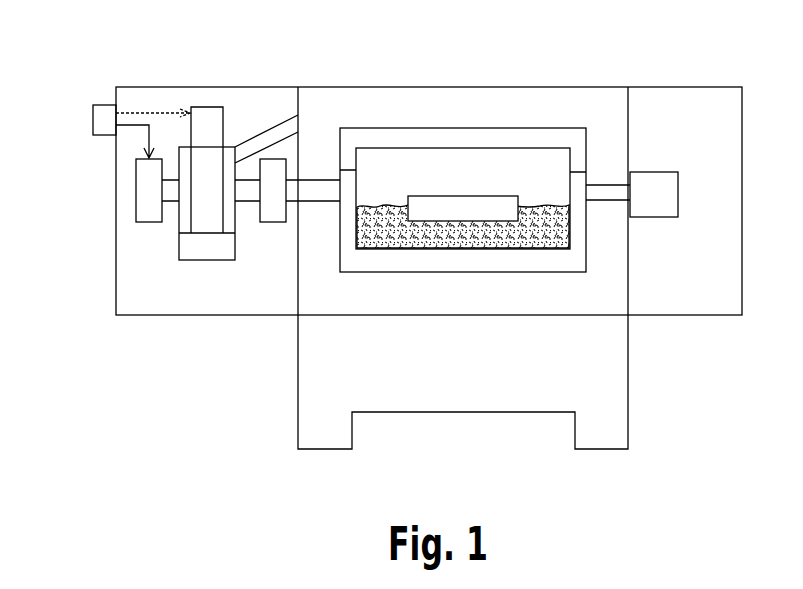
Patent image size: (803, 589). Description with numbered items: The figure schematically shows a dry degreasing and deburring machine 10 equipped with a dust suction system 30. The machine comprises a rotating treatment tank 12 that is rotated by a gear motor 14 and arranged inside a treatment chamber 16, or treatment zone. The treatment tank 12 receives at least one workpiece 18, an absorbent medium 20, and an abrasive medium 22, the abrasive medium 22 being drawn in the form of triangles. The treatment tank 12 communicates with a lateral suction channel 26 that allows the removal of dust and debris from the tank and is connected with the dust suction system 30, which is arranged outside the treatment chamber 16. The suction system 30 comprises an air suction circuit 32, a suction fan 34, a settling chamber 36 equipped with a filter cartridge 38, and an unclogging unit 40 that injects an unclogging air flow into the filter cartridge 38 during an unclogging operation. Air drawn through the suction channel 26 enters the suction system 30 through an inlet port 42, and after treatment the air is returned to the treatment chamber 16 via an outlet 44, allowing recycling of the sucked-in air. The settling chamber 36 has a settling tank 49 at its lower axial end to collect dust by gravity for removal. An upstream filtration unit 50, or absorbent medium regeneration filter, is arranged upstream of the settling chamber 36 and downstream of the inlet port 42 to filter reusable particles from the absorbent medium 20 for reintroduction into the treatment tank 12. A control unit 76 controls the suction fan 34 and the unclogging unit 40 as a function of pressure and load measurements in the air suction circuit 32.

The dry degreasing and deburring machine 10 is at (155, 42).
The rotating treatment tank 12 is at (590, 245).
The gear motor 14 is at (666, 205).
The treatment chamber 16 is at (617, 72).
The workpiece 18 is at (499, 181).
The absorbent medium 20 is at (398, 187).
The abrasive medium 22 is at (455, 245).
The lateral suction channel 26 is at (369, 272).
The dust suction system 30 is at (143, 243).
The air suction circuit 32 is at (249, 218).
The suction fan 34 is at (122, 172).
The settling chamber 36 is at (165, 133).
The filter cartridge 38 is at (206, 252).
The unclogging unit 40 is at (216, 92).
The inlet port 42 is at (312, 192).
The outlet 44 is at (298, 118).
The settling tank 49 is at (188, 250).
The upstream filtration unit 50 is at (279, 238).
The control unit 76 is at (80, 108).